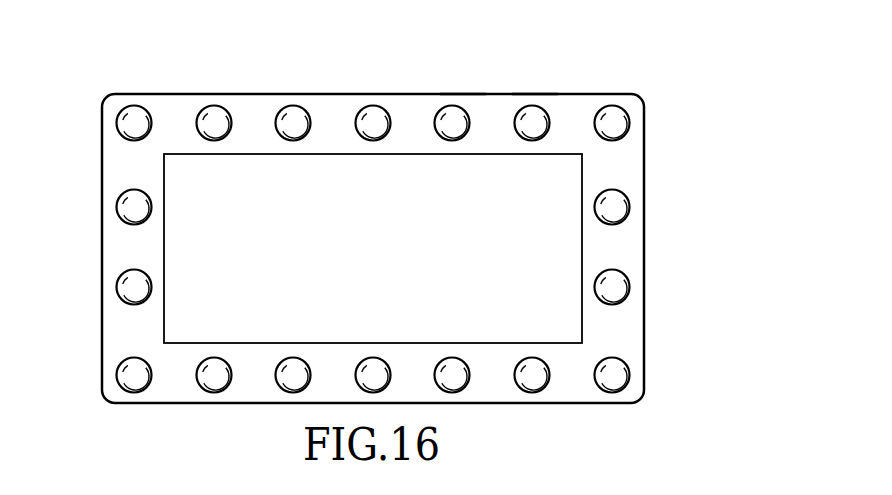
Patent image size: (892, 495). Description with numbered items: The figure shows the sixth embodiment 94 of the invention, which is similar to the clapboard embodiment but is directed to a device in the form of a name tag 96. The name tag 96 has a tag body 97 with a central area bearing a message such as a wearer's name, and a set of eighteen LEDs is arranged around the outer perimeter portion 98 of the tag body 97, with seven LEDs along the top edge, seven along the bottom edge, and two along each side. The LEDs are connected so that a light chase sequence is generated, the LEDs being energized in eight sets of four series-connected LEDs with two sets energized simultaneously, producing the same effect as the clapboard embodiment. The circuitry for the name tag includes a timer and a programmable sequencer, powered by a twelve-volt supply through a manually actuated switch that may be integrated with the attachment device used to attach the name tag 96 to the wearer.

The sixth embodiment 94 is at (680, 214).
The name tag 96 is at (463, 94).
The tag body 97 is at (535, 94).
The outer perimeter portion 98 is at (341, 99).